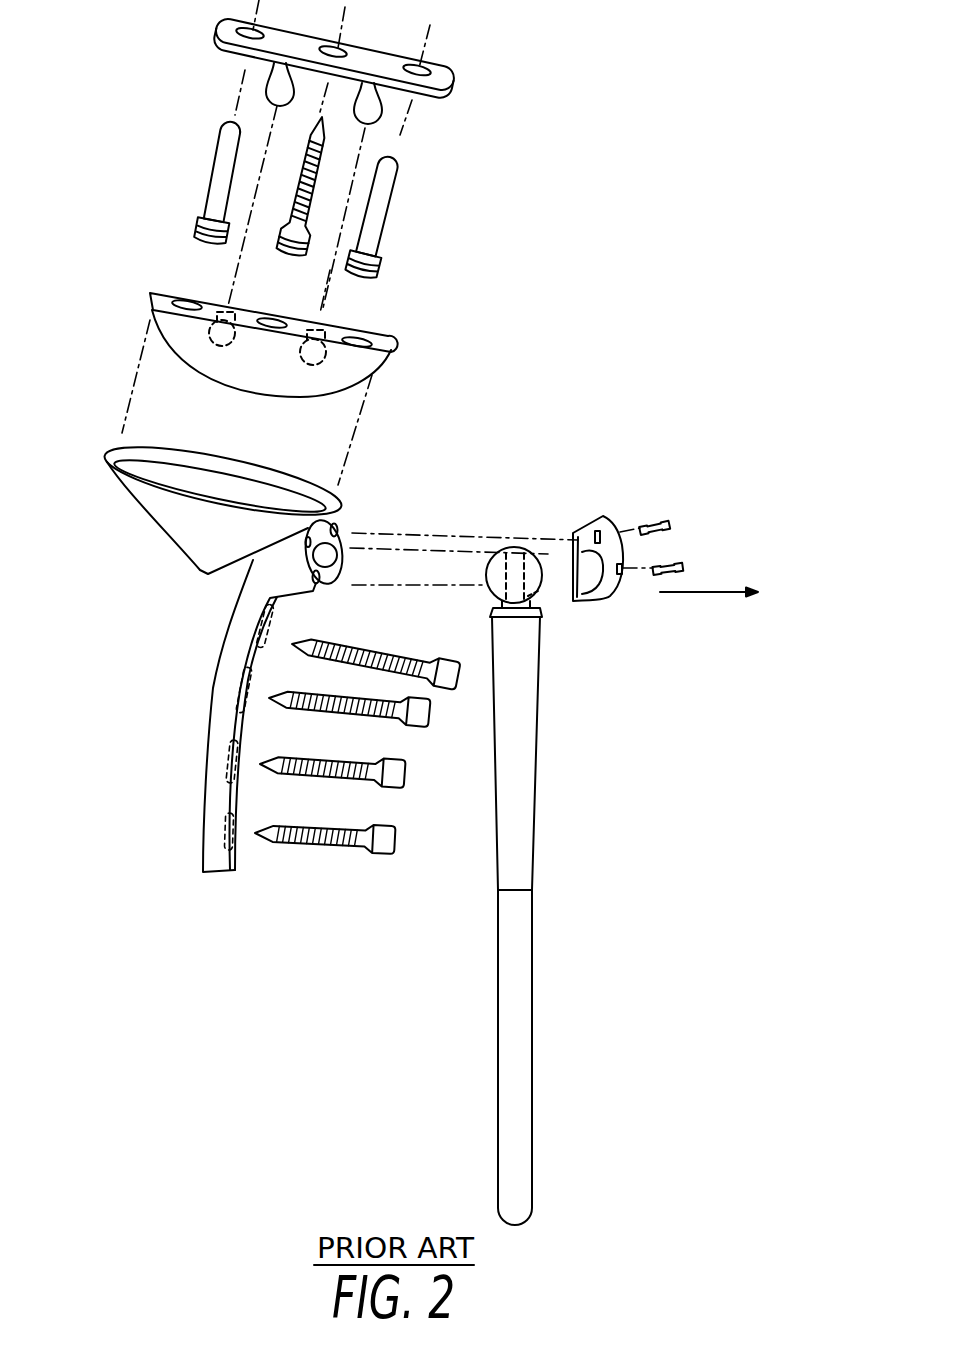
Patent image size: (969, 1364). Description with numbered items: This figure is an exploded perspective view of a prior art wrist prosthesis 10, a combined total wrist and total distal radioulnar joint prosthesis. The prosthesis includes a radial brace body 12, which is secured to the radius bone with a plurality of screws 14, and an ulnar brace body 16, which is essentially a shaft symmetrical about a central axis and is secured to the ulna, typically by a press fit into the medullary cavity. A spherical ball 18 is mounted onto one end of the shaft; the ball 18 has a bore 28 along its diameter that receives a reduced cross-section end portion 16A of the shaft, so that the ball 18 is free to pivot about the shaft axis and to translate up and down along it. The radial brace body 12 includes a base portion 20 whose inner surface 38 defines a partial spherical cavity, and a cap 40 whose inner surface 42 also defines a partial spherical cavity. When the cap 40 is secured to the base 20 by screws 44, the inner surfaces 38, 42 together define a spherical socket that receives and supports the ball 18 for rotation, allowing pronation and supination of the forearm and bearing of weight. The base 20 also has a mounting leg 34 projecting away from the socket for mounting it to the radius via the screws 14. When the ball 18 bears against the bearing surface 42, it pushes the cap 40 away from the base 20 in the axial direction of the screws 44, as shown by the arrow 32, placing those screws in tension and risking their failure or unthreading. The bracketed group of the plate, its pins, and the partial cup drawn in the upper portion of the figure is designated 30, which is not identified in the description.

The wrist prosthesis 10 is at (546, 303).
The radial brace body 12 is at (190, 697).
The screws 14 is at (452, 690).
The ulnar brace body 16 is at (554, 778).
The reduced cross-section end portion 16A is at (496, 598).
The spherical ball 18 is at (531, 593).
The base portion 20 is at (337, 515).
The bore 28 is at (537, 595).
The augment assembly 30 is at (192, 6).
The arrow 32 is at (720, 593).
The mounting leg 34 is at (213, 797).
The inner surface 38 is at (343, 578).
The cap 40 is at (610, 531).
The inner surface 42 is at (562, 578).
The screws 44 is at (672, 526).